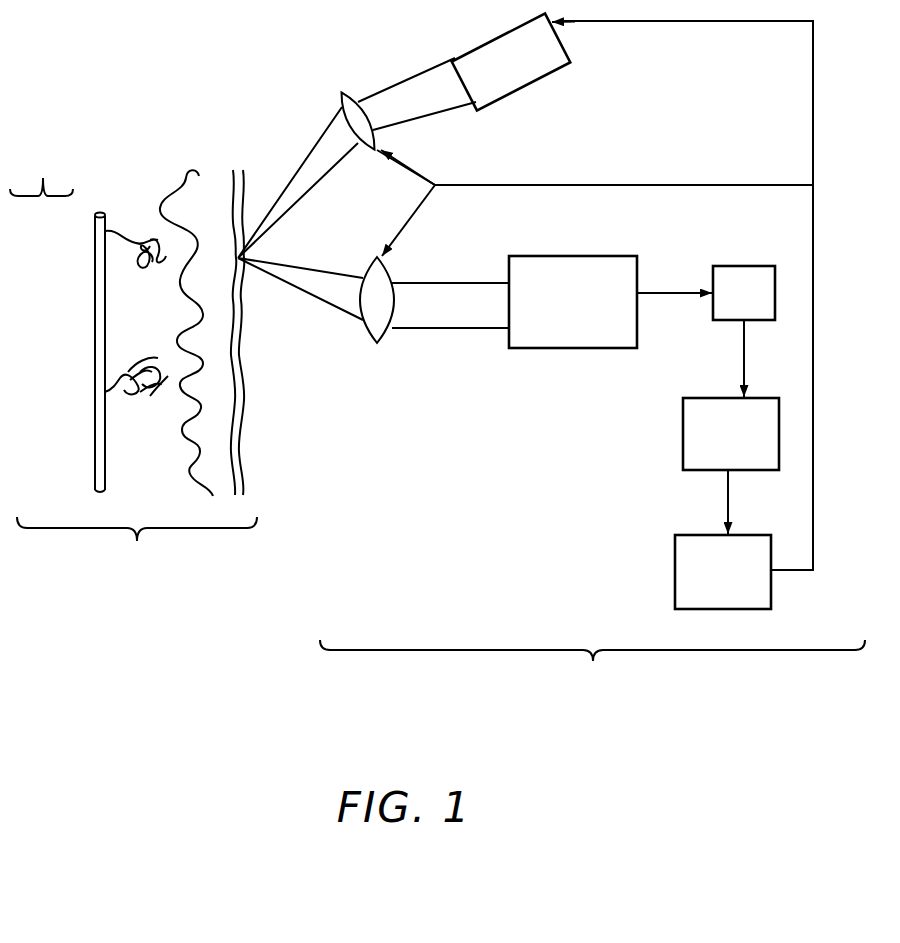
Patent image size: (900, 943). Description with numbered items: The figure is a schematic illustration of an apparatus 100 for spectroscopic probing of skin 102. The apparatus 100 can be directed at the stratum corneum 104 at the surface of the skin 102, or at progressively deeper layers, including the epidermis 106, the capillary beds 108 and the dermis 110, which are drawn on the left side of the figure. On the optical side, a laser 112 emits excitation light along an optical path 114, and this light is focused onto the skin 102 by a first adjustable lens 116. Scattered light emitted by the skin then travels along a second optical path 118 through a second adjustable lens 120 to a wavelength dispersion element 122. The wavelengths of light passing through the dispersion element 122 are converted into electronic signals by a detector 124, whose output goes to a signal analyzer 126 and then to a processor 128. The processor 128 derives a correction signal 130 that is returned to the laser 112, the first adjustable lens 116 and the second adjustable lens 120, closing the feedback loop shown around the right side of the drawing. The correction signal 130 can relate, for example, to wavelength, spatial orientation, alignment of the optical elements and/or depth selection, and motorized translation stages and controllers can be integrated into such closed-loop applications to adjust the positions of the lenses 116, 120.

The apparatus 100 is at (592, 669).
The skin 102 is at (137, 547).
The stratum corneum 104 is at (237, 166).
The epidermis 106 is at (177, 165).
The capillary beds 108 is at (106, 188).
The dermis 110 is at (41, 169).
The laser 112 is at (511, 61).
The optical path 114 is at (402, 83).
The first adjustable lens 116 is at (342, 94).
The optical path 118 is at (323, 303).
The second adjustable lens 120 is at (368, 336).
The wavelength dispersion element 122 is at (552, 309).
The detector 124 is at (723, 302).
The signal analyzer 126 is at (710, 442).
The processor 128 is at (702, 582).
The correction signal 130 is at (815, 492).